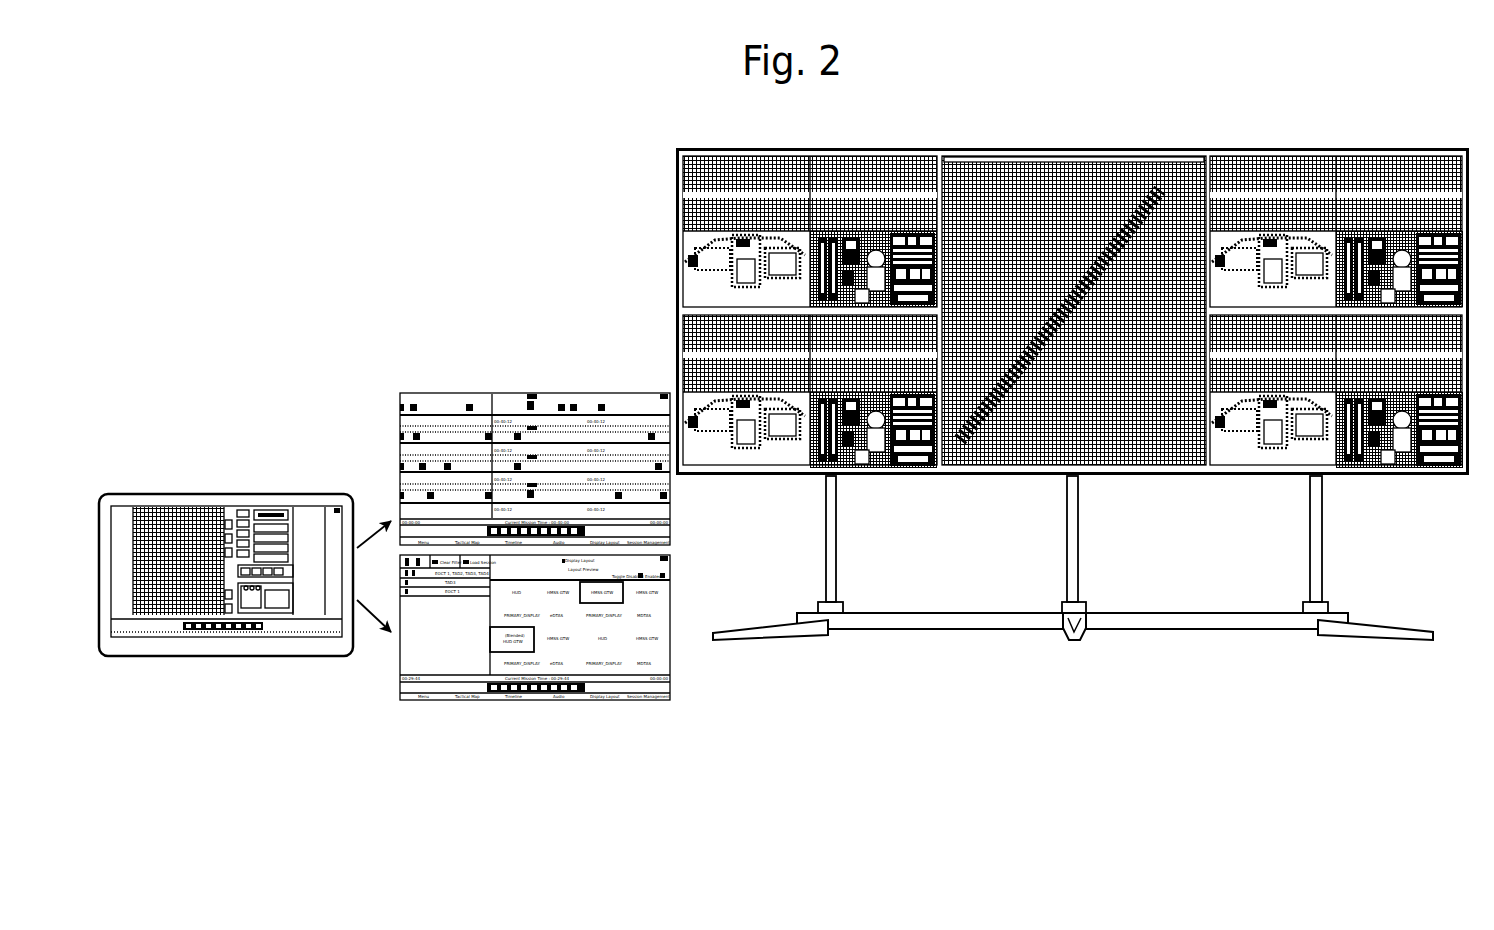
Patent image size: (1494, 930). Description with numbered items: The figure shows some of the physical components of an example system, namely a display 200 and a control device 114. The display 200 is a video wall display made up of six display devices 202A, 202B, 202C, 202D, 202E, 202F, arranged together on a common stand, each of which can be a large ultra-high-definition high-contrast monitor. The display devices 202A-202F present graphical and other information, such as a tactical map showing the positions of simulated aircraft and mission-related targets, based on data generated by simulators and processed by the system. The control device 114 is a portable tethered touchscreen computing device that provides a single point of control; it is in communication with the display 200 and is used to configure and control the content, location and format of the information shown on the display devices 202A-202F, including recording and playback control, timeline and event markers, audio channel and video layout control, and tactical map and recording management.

The control device 114 is at (123, 488).
The display 200 is at (583, 217).
The display device 202A is at (674, 186).
The display device 202B is at (674, 352).
The display device 202C is at (1378, 146).
The display device 202D is at (1377, 478).
The display device 202E is at (1005, 478).
The display device 202F is at (1005, 640).